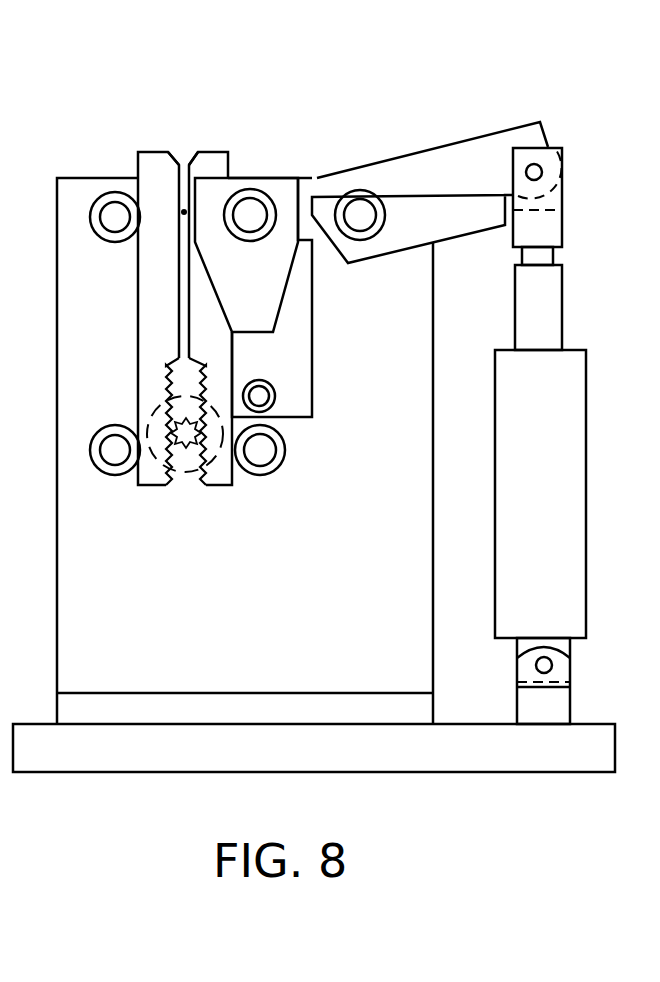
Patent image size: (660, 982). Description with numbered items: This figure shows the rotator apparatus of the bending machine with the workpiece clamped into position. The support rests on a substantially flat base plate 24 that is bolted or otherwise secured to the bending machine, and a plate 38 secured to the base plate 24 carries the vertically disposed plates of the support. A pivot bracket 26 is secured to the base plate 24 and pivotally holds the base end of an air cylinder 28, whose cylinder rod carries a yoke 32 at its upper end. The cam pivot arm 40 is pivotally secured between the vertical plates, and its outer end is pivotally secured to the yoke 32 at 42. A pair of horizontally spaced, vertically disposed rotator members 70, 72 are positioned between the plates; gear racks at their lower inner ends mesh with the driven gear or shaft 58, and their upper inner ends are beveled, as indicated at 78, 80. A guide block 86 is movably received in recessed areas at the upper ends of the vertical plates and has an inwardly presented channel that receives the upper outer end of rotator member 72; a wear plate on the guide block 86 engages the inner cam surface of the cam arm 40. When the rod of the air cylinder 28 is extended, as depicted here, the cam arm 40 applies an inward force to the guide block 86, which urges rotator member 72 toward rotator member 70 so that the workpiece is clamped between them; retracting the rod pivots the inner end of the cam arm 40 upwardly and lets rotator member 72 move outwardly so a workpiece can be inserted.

The base plate 24 is at (314, 776).
The pivot bracket 26 is at (557, 707).
The air cylinder 28 is at (570, 473).
The yoke 32 is at (550, 233).
The plate 38 is at (183, 703).
The cam pivot arm 40 is at (437, 163).
The pivotal connection 42 is at (541, 165).
The driven gear or shaft 58 is at (183, 452).
The rotator member 70 is at (137, 147).
The rotator member 72 is at (212, 165).
The beveled upper inner end 78 is at (178, 155).
The beveled upper inner end 80 is at (190, 160).
The guide block 86 is at (277, 190).